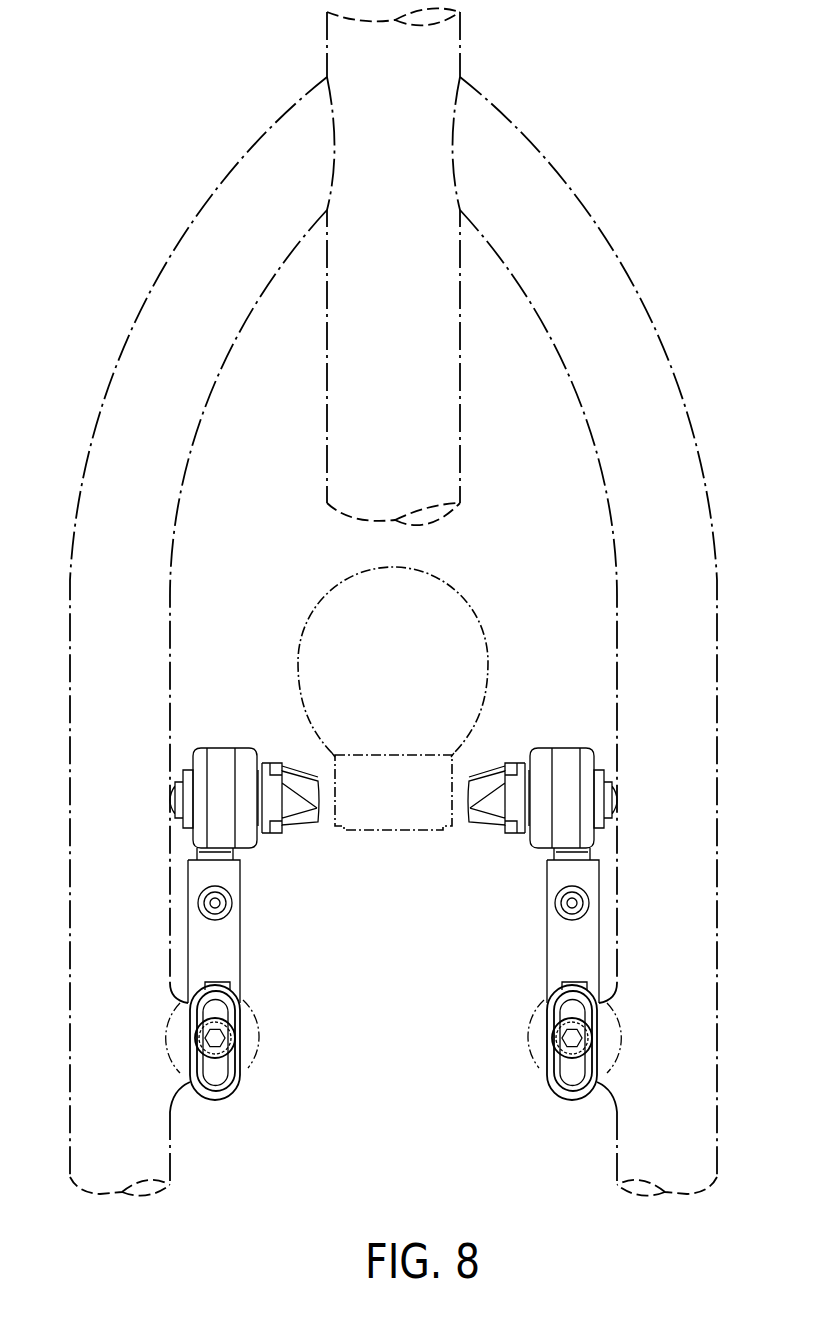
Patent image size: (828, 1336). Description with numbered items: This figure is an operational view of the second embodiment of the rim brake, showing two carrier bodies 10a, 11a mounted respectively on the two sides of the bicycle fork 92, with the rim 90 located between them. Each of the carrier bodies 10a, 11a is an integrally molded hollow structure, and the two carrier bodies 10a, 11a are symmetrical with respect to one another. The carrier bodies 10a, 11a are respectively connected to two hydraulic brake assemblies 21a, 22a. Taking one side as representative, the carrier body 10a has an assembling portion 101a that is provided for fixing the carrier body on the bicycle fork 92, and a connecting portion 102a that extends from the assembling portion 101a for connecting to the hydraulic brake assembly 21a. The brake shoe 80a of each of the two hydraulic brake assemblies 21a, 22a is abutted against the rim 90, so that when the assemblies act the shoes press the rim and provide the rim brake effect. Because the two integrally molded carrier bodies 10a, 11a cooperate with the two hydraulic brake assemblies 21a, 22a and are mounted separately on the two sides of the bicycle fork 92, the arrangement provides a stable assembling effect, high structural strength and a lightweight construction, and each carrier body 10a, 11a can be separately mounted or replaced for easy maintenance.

The bicycle fork 92 is at (578, 258).
The rim 90 is at (410, 806).
The hydraulic brake assembly 21a is at (268, 847).
The hydraulic brake assembly 22a is at (544, 851).
The brake shoe 80a is at (303, 813).
The carrier body 10a is at (268, 980).
The carrier body 11a is at (548, 945).
The connecting portion 102a is at (233, 903).
The assembling portion 101a is at (223, 1071).